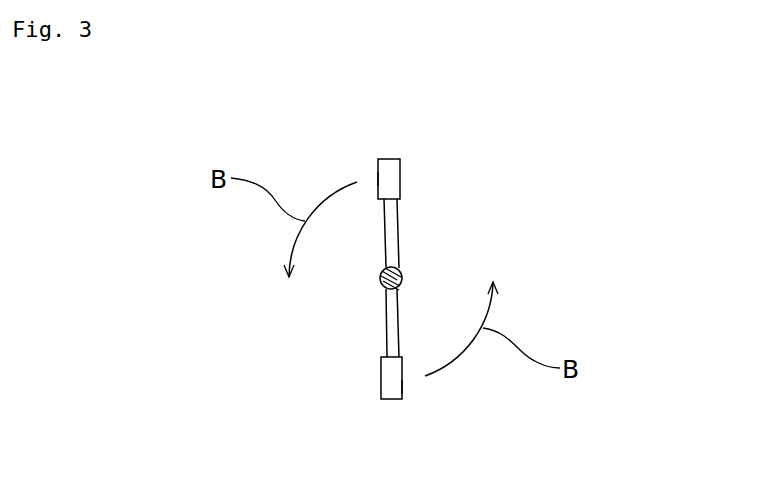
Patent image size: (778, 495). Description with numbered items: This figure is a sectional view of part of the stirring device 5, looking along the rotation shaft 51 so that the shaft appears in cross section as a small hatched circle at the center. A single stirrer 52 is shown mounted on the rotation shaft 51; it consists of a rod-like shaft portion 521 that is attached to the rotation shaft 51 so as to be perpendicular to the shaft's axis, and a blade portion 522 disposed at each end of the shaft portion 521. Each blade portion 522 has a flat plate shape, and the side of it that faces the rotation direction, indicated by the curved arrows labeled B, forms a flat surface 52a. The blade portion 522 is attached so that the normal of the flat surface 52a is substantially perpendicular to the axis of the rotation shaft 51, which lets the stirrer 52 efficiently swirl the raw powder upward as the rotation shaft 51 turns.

The stirring device 5 is at (443, 284).
The rotation shaft 51 is at (402, 276).
The stirrer 52 is at (388, 284).
The shaft portion 521 is at (399, 230).
The blade portion 522 is at (390, 170).
The flat surface 52a is at (378, 178).